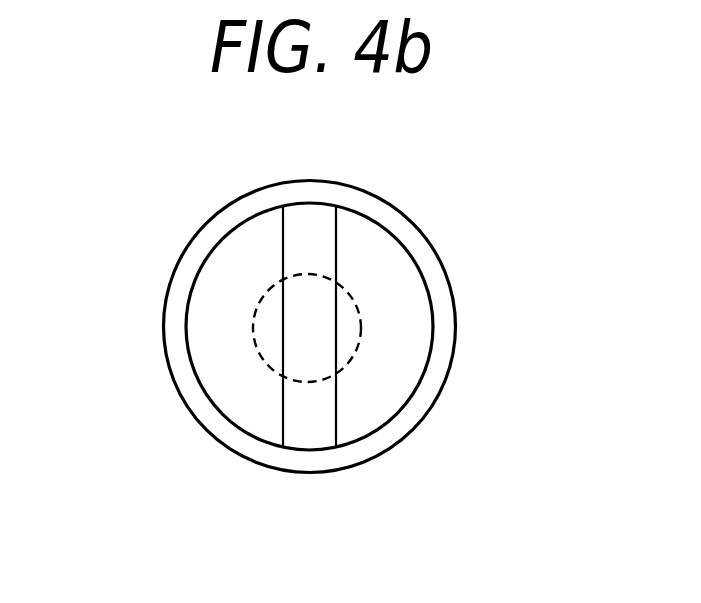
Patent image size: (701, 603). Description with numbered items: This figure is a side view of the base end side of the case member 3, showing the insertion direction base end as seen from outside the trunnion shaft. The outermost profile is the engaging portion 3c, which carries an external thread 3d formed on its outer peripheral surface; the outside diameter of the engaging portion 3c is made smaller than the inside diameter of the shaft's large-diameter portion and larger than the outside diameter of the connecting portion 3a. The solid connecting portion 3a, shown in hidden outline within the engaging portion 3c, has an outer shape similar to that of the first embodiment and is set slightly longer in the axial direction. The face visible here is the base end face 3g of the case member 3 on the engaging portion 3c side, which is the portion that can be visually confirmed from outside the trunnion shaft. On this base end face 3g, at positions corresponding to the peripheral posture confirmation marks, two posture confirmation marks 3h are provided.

The case member 3 is at (420, 192).
The connecting portion 3a is at (257, 307).
The engaging portion 3c is at (358, 203).
The external thread 3d is at (427, 258).
The base end face 3g is at (413, 335).
The posture confirmation marks 3h is at (312, 435).